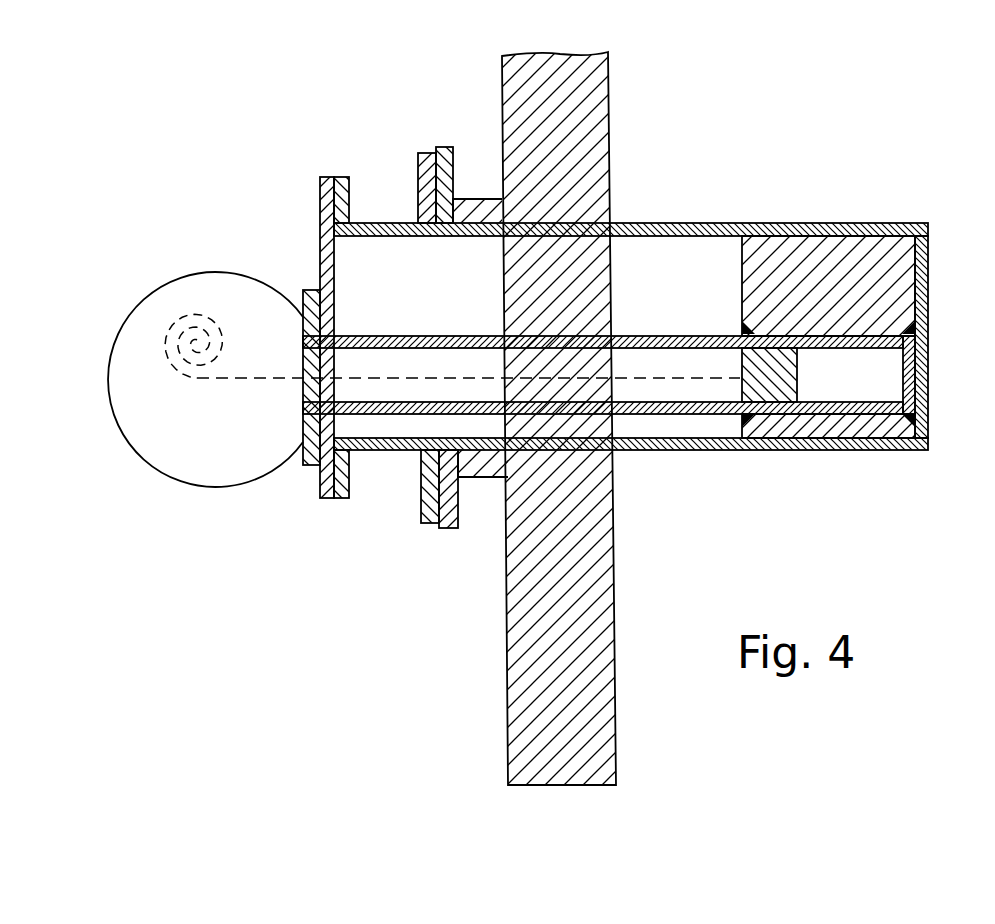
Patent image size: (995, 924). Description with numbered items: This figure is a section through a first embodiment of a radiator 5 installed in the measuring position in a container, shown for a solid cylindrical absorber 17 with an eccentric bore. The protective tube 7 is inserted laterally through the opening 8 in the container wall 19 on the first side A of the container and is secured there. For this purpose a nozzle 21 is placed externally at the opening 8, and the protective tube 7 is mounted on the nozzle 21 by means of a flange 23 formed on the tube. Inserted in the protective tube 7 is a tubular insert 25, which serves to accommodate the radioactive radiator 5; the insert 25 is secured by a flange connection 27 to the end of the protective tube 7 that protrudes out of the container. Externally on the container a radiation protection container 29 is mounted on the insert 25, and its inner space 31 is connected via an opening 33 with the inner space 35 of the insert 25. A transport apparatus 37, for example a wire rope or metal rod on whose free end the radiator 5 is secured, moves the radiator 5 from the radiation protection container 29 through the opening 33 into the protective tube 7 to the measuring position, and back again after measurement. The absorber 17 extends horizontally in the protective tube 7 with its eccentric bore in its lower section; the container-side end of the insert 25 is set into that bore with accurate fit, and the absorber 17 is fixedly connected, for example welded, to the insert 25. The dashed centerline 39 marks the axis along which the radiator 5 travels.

The first side A is at (445, 110).
The radiator 5 is at (780, 383).
The protective tube 7 is at (795, 225).
The opening 8 is at (517, 220).
The absorber 17 is at (862, 262).
The container wall 19 is at (540, 677).
The nozzle 21 is at (484, 470).
The flange 23 is at (428, 497).
The insert 25 is at (640, 338).
The flange connection 27 is at (337, 500).
The radiation protection container 29 is at (128, 441).
The inner space 31 is at (150, 325).
The opening 33 is at (303, 363).
The inner space 35 is at (490, 338).
The transport apparatus 37 is at (186, 318).
The axis 39 is at (397, 338).